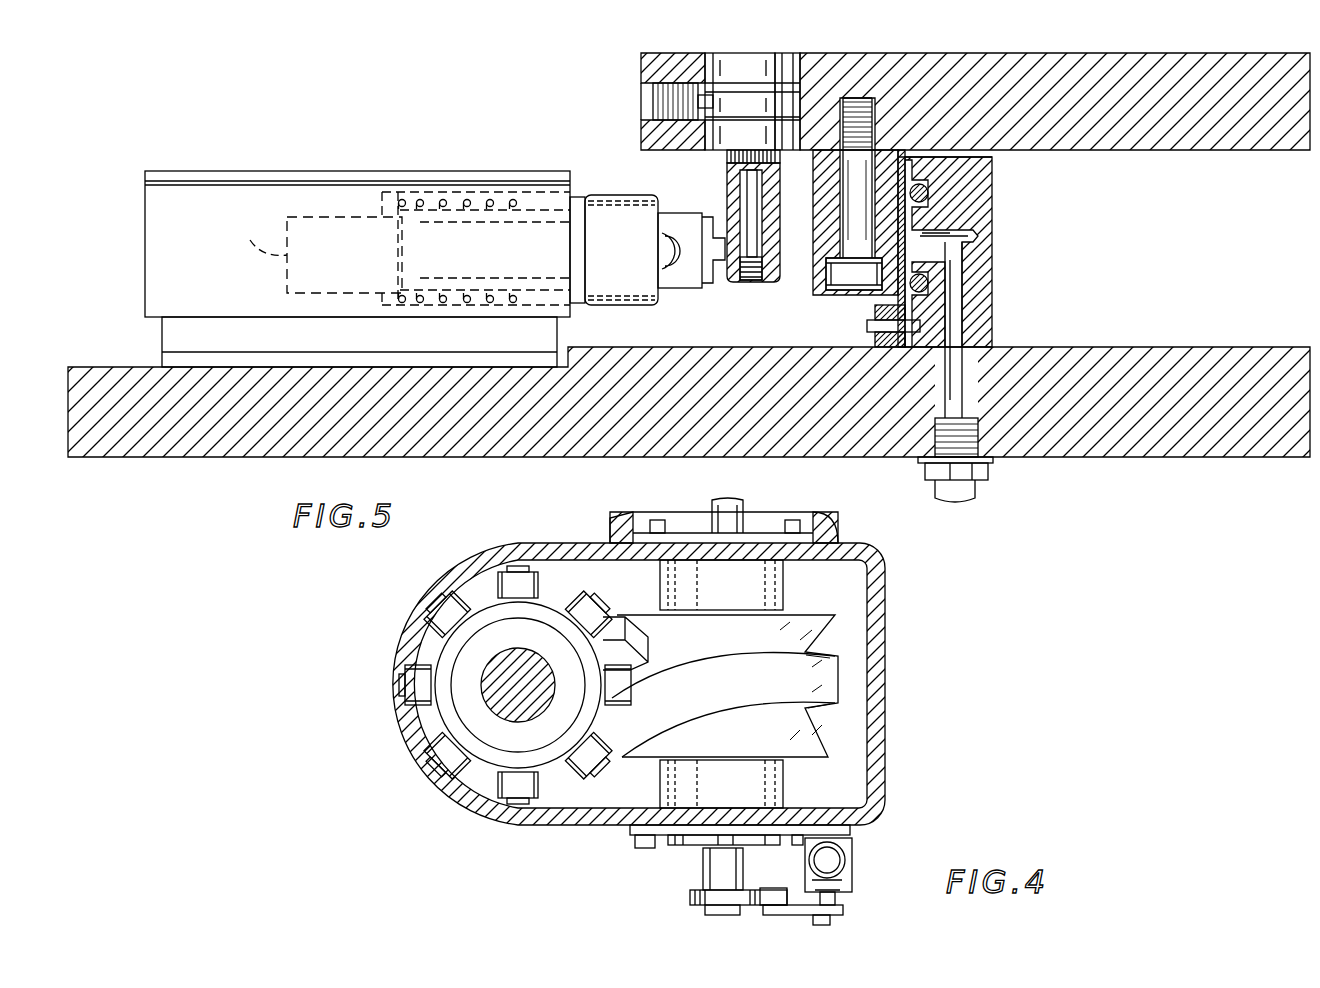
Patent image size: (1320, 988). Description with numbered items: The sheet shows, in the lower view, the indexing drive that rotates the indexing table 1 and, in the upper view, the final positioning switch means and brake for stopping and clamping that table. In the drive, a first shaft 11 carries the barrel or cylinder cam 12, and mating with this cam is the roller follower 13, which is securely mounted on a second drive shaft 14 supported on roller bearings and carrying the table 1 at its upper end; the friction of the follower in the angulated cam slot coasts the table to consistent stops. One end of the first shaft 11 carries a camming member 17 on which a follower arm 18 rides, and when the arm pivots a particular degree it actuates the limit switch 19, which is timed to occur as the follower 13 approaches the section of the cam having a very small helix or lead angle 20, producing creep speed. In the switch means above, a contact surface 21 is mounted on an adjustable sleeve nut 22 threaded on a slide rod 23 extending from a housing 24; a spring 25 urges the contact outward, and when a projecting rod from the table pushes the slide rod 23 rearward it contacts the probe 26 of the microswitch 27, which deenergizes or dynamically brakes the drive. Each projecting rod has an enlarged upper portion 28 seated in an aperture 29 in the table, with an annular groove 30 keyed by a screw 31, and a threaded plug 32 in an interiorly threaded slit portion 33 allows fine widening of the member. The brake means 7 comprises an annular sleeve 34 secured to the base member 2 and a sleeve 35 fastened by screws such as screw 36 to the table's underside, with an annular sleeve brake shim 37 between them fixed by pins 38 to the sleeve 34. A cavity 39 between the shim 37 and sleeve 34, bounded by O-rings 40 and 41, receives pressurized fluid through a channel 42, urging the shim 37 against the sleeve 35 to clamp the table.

In FIG. 5, the indexing table 1 is at (1188, 151).
In FIG. 5, the base member 2 is at (1182, 347).
In FIG. 5, the brake means 7 is at (1002, 224).
In FIG. 4, the first shaft 11 is at (735, 507).
In FIG. 4, the cam 12 is at (855, 683).
In FIG. 4, the roller follower 13 is at (435, 718).
In FIG. 4, the second drive shaft 14 is at (490, 668).
In FIG. 4, the camming member 17 is at (692, 895).
In FIG. 4, the follower arm 18 is at (790, 905).
In FIG. 4, the limit switch 19 is at (852, 878).
In FIG. 4, the section of indexing cam having a very small helix or lead angle 20 is at (692, 680).
In FIG. 5, the contact surface 21 is at (686, 225).
In FIG. 5, the adjustable sleeve nut 22 is at (625, 302).
In FIG. 5, the slide rod 23 is at (505, 222).
In FIG. 5, the housing 24 is at (247, 177).
In FIG. 5, the spring 25 is at (416, 205).
In FIG. 5, the probe 26 is at (395, 252).
In FIG. 5, the microswitch 27 is at (251, 238).
In FIG. 5, the enlarged upper portion 28 is at (770, 60).
In FIG. 5, the aperture 29 is at (700, 62).
In FIG. 5, the annular groove 30 is at (740, 78).
In FIG. 5, the screw 31 is at (655, 100).
In FIG. 5, the threaded plug 32 is at (751, 276).
In FIG. 5, the interiorly threaded slit portion 33 is at (745, 200).
In FIG. 5, the projecting portion 34 is at (995, 258).
In FIG. 5, the projecting member 35 is at (813, 275).
In FIG. 5, the screw 36 is at (853, 290).
In FIG. 5, the annular sleeve brake shim 37 is at (870, 308).
In FIG. 5, the pin 38 is at (876, 336).
In FIG. 5, the cavity 39 is at (915, 238).
In FIG. 5, the O-ring 40 is at (926, 191).
In FIG. 5, the O-ring 41 is at (927, 284).
In FIG. 5, the channel 42 is at (957, 340).